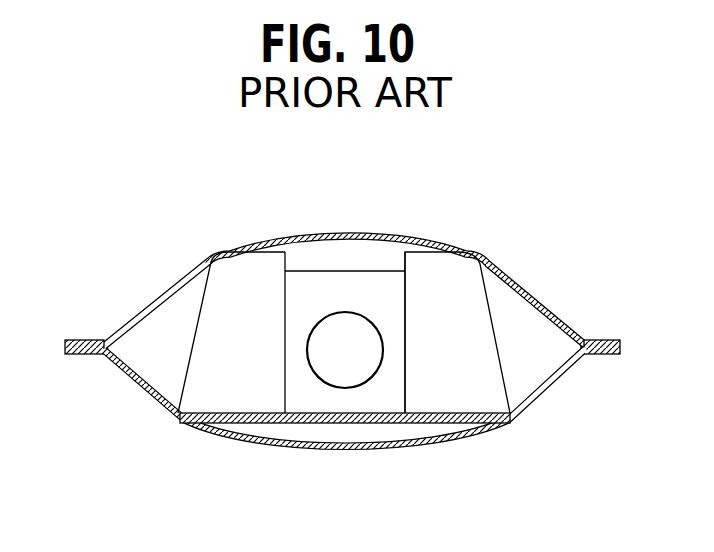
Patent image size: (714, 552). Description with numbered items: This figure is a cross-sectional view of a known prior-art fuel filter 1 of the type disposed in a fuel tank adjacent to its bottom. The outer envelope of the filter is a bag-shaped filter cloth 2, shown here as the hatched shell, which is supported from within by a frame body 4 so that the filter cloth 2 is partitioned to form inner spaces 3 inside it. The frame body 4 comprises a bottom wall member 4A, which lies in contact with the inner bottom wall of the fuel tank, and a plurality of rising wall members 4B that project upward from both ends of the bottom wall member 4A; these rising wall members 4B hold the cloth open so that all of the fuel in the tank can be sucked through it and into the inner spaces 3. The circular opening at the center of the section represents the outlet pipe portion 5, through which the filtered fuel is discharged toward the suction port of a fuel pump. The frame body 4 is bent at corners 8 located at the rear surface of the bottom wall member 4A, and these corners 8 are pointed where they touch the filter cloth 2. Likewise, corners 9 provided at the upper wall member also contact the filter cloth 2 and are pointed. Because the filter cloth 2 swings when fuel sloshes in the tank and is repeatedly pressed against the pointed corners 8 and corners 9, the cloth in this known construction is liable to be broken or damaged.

The fuel filter 1 is at (408, 228).
The filter cloth 2 is at (340, 233).
The inner spaces 3 is at (320, 394).
The frame body 4 is at (347, 438).
The bottom wall member 4A is at (395, 423).
The rising wall members 4B is at (475, 325).
The outlet pipe portion 5 is at (333, 312).
The corners 8 is at (182, 425).
The corners 9 is at (212, 255).